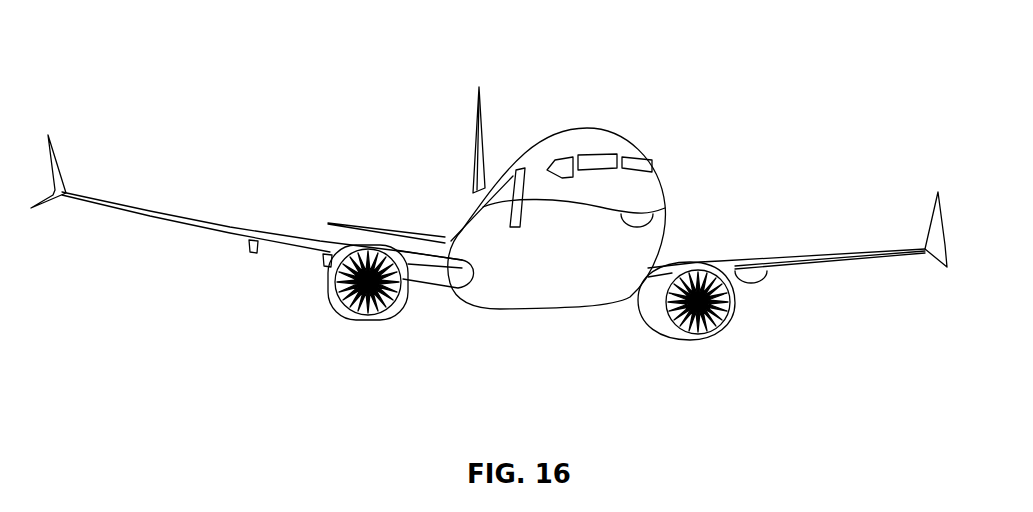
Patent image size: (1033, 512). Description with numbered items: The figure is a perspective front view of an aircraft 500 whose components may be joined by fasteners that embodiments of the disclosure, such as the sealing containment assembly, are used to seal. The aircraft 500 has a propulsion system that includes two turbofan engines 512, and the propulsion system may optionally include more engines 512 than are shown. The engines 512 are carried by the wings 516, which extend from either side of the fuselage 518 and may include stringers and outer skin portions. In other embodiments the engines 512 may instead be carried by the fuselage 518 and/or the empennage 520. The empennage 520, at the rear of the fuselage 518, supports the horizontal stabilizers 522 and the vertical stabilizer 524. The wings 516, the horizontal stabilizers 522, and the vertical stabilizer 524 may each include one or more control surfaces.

The aircraft 500 is at (276, 62).
The turbofan engine 512 is at (370, 321).
The wing 516 is at (180, 217).
The fuselage 518 is at (670, 212).
The empennage 520 is at (468, 205).
The horizontal stabilizer 522 is at (358, 227).
The vertical stabilizer 524 is at (475, 120).